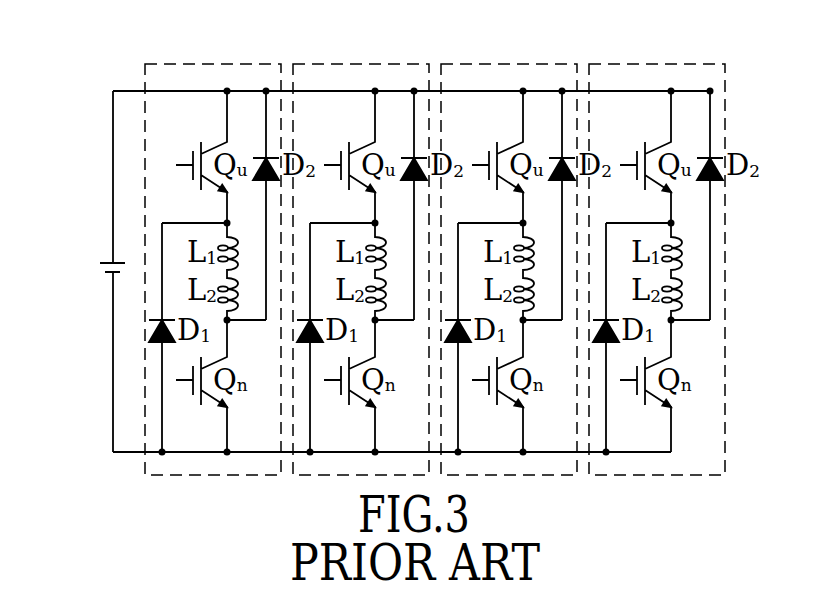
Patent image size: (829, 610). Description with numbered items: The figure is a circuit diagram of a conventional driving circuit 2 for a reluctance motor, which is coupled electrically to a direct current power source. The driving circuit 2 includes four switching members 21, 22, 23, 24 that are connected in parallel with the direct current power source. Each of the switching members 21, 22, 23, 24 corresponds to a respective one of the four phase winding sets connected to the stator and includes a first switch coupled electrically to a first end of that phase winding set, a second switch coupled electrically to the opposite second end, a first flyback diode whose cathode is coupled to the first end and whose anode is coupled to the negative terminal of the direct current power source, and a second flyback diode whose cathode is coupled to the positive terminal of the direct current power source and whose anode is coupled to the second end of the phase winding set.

The driving circuit 2 is at (125, 50).
The switching member 21 is at (226, 64).
The switching member 22 is at (378, 244).
The switching member 23 is at (526, 244).
The switching member 24 is at (674, 244).